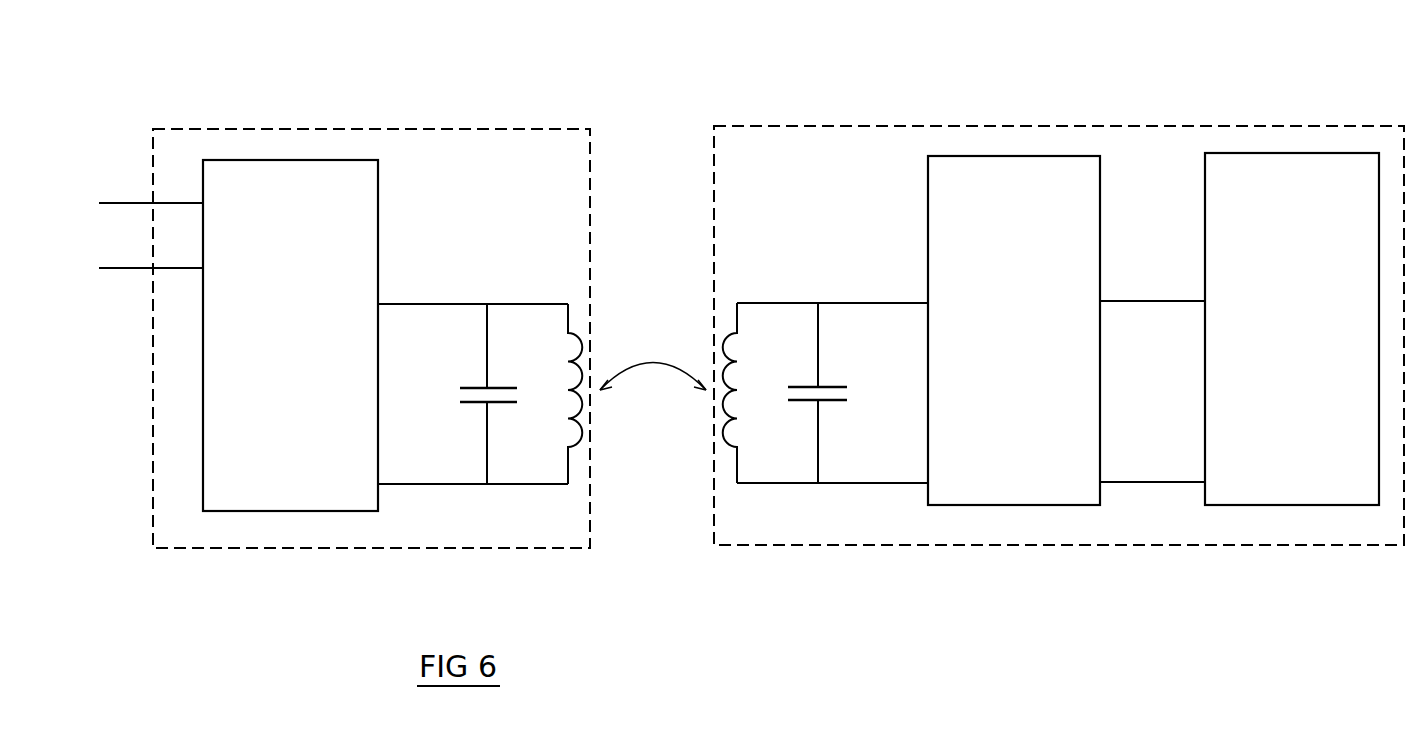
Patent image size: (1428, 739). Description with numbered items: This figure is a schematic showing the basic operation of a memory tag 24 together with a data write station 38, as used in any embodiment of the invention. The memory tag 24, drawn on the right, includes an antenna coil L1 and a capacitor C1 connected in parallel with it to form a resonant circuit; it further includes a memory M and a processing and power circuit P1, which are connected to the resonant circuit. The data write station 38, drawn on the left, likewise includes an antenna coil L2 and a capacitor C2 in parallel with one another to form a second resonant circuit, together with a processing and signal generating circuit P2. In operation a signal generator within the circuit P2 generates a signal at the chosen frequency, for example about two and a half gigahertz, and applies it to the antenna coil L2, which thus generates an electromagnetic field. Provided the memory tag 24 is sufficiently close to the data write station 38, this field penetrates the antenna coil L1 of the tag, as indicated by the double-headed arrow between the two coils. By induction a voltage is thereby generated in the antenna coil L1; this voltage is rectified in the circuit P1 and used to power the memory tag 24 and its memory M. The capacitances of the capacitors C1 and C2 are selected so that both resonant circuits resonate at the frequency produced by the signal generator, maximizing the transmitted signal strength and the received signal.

The data write station 38 is at (414, 128).
The memory tag 24 is at (866, 126).
The processing and signal generating circuit P2 is at (290, 335).
The antenna coil L2 is at (559, 394).
The capacitor C2 is at (483, 394).
The antenna coil L1 is at (748, 393).
The capacitor C1 is at (825, 393).
The processing and power circuit P1 is at (1014, 330).
The memory M is at (1292, 329).